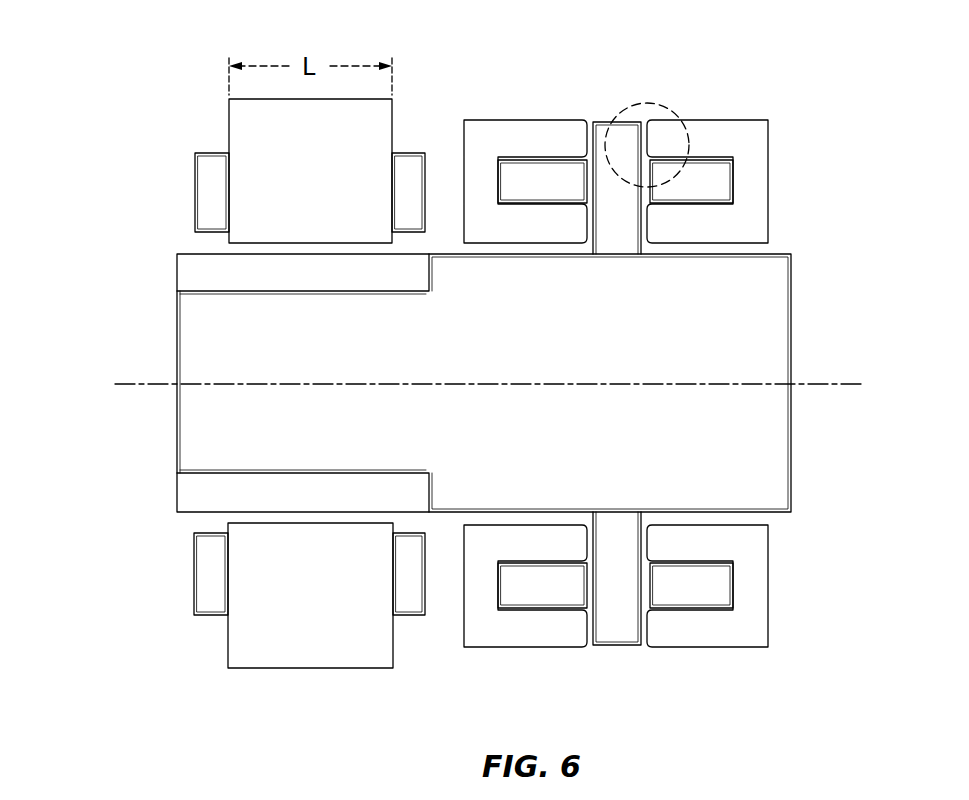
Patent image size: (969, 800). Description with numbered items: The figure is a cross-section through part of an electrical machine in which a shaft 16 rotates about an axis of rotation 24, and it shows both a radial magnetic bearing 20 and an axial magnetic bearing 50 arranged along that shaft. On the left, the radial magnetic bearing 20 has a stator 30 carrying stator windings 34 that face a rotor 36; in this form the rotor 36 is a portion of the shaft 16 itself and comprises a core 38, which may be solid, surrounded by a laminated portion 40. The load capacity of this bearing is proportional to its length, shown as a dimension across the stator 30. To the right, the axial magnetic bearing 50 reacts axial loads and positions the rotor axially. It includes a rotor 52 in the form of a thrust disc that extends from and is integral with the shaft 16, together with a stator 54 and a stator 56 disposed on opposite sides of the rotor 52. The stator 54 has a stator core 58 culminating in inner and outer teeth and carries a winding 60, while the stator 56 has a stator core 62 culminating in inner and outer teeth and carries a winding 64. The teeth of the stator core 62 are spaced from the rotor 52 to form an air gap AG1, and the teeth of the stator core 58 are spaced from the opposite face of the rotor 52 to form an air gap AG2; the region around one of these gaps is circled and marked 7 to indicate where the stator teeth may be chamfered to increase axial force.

The shaft 16 is at (793, 310).
The radial magnetic bearing 20 is at (150, 173).
The axis of rotation 24 is at (812, 385).
The stator 30 is at (327, 186).
The stator windings 34 is at (207, 153).
The rotor 36 is at (115, 490).
The core 38 is at (177, 445).
The laminated portion 40 is at (177, 272).
The axial magnetic bearing 50 is at (828, 58).
The rotor 52 is at (603, 120).
The stator 54 is at (546, 95).
The stator 56 is at (722, 95).
The stator core 58 is at (513, 120).
The winding 60 is at (559, 195).
The stator core 62 is at (740, 120).
The winding 64 is at (719, 195).
The detail view circle 7 is at (655, 105).
The air gap AG1 is at (647, 652).
The air gap AG2 is at (583, 652).